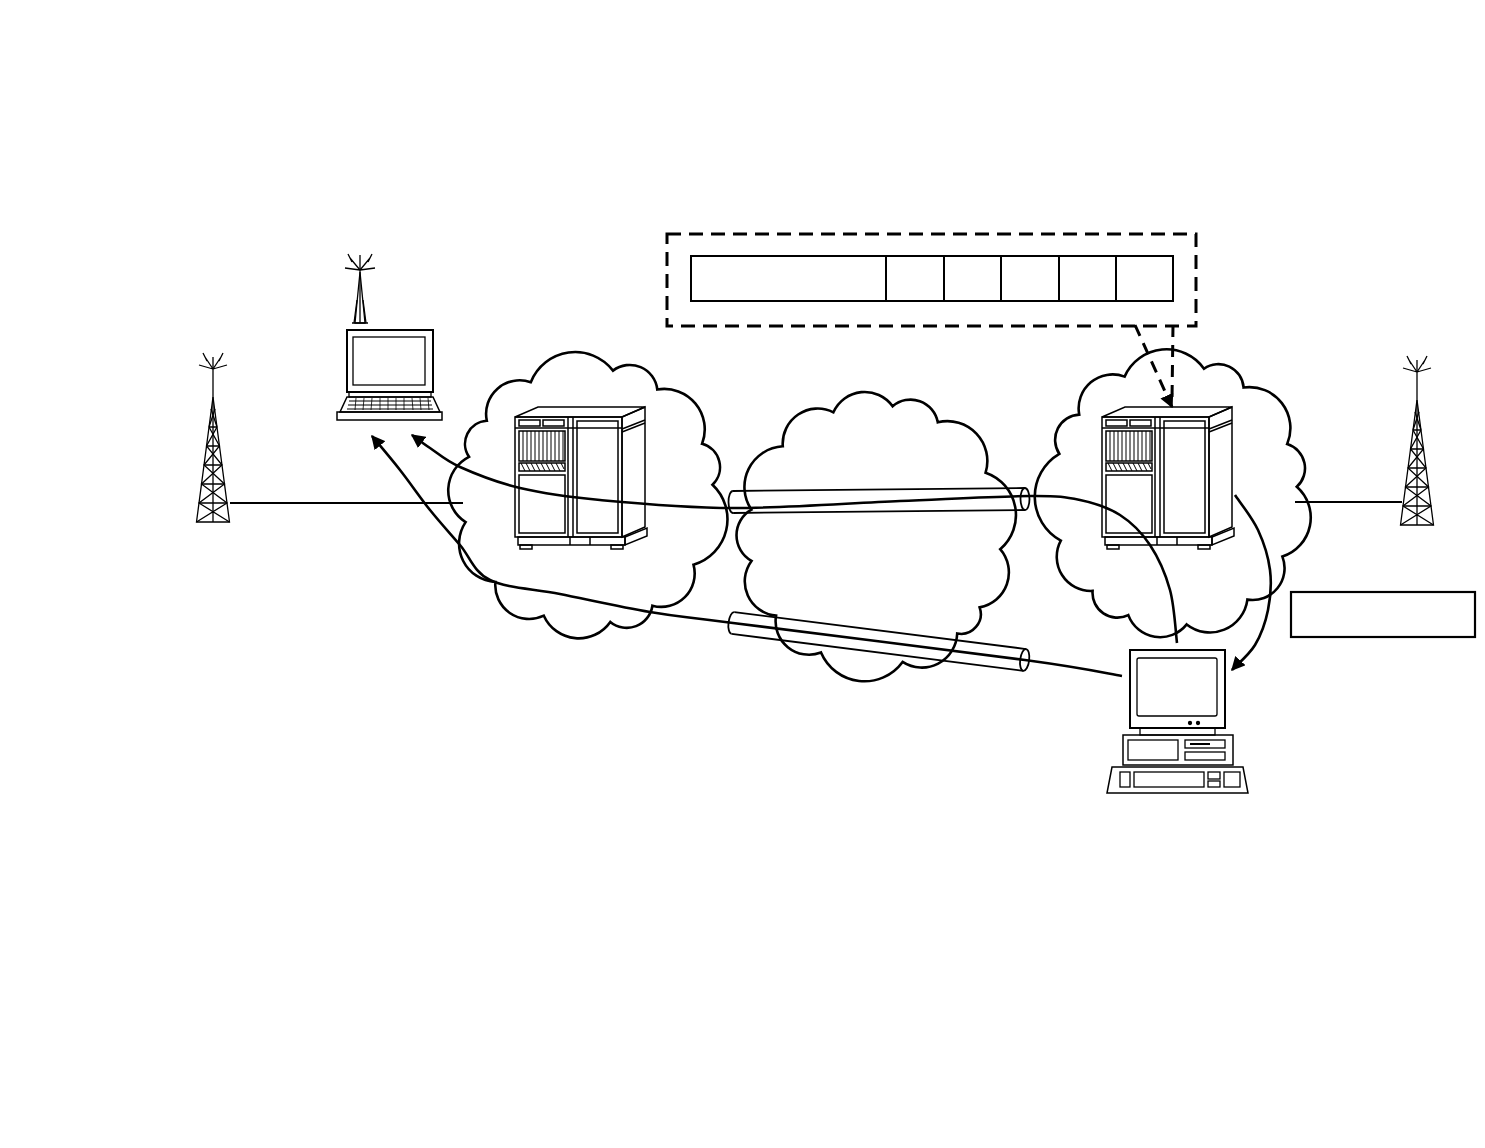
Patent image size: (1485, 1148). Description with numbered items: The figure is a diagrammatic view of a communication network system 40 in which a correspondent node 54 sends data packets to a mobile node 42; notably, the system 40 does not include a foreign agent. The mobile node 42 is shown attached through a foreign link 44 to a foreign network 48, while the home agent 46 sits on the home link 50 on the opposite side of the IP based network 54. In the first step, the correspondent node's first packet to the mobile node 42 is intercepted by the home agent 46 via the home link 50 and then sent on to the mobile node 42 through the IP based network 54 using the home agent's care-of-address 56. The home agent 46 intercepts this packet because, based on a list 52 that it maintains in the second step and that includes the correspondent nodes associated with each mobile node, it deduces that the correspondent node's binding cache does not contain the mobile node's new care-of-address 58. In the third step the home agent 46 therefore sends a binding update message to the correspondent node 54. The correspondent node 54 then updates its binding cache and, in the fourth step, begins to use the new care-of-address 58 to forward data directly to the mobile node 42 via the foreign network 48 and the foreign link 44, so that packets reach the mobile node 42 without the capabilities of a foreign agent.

The communication network system 40 is at (462, 710).
The mobile node 42 is at (412, 328).
The foreign link 44 is at (200, 470).
The home agent 46 is at (1225, 475).
The foreign network 48 is at (638, 476).
The home link 50 is at (1433, 465).
The list 52 is at (1197, 283).
The correspondent node / IP based network 54 is at (893, 592).
The care-of-address 56 is at (1008, 487).
The new care-of-address 58 is at (968, 668).